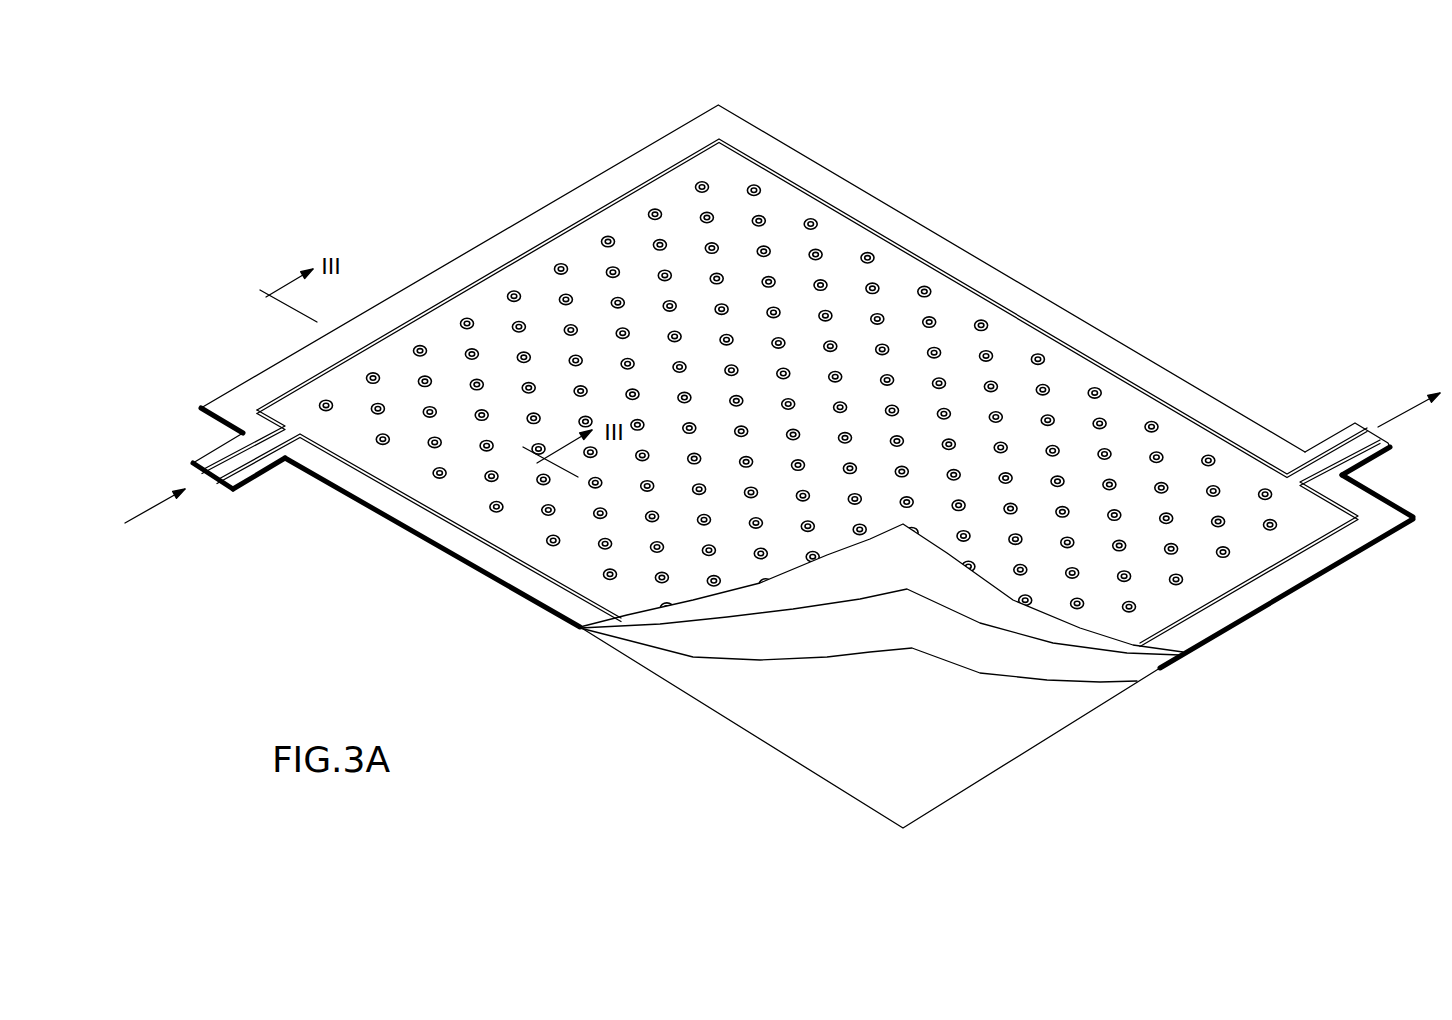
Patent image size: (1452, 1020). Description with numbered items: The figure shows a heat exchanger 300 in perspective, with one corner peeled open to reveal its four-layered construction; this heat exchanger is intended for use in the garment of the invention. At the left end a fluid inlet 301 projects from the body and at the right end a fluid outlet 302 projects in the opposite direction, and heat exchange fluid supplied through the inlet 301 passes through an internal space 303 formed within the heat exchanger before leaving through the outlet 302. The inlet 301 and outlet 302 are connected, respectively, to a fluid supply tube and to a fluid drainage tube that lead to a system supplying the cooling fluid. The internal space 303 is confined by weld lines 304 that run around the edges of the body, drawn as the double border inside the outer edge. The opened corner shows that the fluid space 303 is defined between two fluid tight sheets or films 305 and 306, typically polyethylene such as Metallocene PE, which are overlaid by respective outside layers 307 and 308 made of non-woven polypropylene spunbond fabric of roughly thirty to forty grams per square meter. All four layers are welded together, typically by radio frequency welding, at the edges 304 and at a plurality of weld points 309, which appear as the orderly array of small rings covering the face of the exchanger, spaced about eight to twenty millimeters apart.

The heat exchanger 300 is at (807, 386).
The fluid inlet 301 is at (205, 507).
The fluid outlet 302 is at (1372, 397).
The internal space 303 is at (736, 410).
The weld lines 304 is at (791, 388).
The fluid tight sheet 305 is at (881, 653).
The fluid tight sheet 306 is at (902, 669).
The outside layer 307 is at (870, 727).
The outside layer 308 is at (924, 653).
The weld points 309 is at (578, 230).